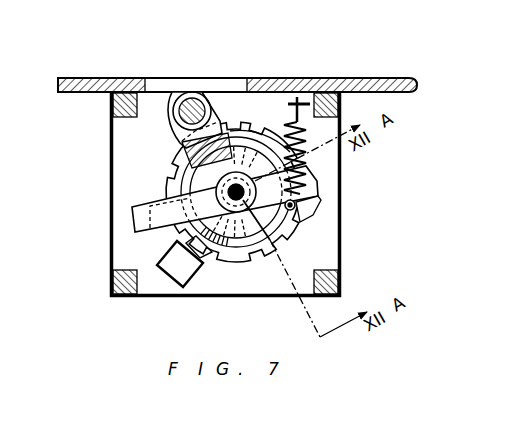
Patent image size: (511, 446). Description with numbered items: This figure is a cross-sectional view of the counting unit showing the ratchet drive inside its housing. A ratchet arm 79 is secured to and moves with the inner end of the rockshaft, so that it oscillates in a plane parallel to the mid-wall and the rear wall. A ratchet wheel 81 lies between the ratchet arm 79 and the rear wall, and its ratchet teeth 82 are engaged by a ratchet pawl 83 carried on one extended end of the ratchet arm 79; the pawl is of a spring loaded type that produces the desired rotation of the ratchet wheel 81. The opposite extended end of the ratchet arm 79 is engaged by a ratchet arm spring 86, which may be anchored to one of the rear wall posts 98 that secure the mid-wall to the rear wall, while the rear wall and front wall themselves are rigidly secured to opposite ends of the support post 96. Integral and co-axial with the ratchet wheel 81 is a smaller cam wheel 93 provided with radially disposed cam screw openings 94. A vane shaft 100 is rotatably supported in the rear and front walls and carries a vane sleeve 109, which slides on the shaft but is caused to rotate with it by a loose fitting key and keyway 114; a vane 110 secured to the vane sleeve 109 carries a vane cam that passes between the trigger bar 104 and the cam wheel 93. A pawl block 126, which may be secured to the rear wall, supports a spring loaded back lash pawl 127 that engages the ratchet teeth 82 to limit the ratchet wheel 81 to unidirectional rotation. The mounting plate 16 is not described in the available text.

The mounting plate 16 is at (370, 79).
The ratchet arm 79 is at (168, 228).
The ratchet wheel 81 is at (242, 265).
The ratchet teeth 82 is at (303, 215).
The ratchet pawl 83 is at (163, 200).
The ratchet arm spring 86 is at (303, 163).
The cam wheel 93 is at (257, 250).
The cam screw openings 94 is at (250, 142).
The support post 96 is at (110, 101).
The rear wall posts 98 is at (341, 108).
The vane shaft 100 is at (191, 93).
The trigger bar 104 is at (180, 152).
The vane sleeve 109 is at (175, 93).
The vane 110 is at (230, 93).
The key and keyway 114 is at (211, 102).
The pawl block 126 is at (175, 265).
The back lash pawl 127 is at (196, 252).